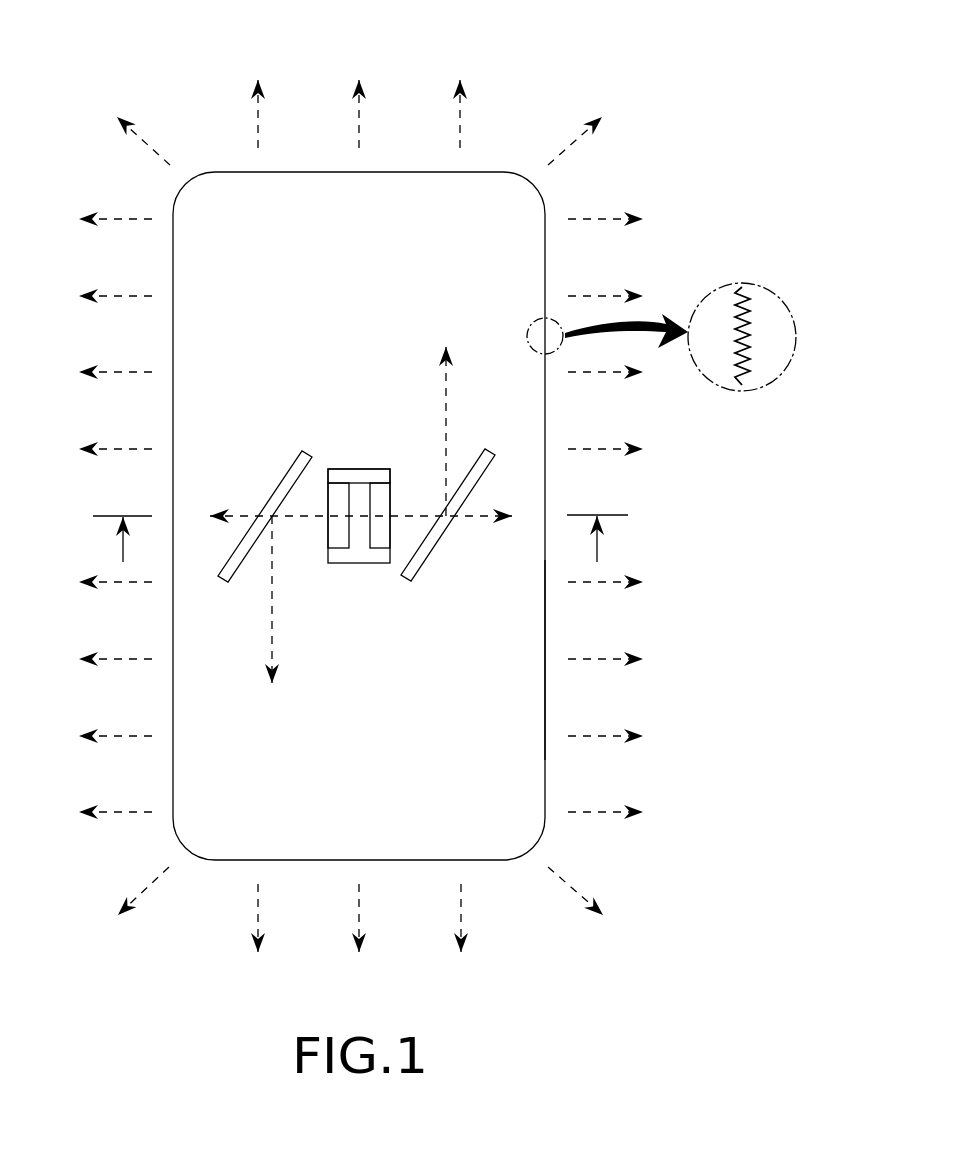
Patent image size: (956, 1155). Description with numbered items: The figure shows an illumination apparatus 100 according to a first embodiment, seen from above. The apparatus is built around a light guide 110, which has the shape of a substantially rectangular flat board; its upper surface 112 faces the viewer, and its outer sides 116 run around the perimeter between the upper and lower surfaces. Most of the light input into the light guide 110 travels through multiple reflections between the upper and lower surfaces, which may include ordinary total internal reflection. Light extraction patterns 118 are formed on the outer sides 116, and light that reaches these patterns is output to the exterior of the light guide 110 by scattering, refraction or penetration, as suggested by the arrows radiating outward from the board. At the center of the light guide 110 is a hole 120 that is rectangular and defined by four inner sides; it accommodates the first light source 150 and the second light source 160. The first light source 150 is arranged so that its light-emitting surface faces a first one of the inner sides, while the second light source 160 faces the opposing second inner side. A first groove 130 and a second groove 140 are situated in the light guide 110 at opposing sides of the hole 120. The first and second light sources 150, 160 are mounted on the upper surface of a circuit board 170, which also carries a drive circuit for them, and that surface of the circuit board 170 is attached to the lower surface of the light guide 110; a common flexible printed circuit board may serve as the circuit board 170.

The illumination apparatus 100 is at (380, 39).
The light guide 110 is at (507, 160).
The upper surface 112 is at (535, 621).
The outer sides 116 is at (545, 705).
The light extraction patterns 118 is at (757, 346).
The hole 120 is at (390, 469).
The first groove 130 is at (302, 450).
The second groove 140 is at (486, 450).
The first light source 150 is at (343, 549).
The second light source 160 is at (380, 549).
The circuit board 170 is at (349, 469).